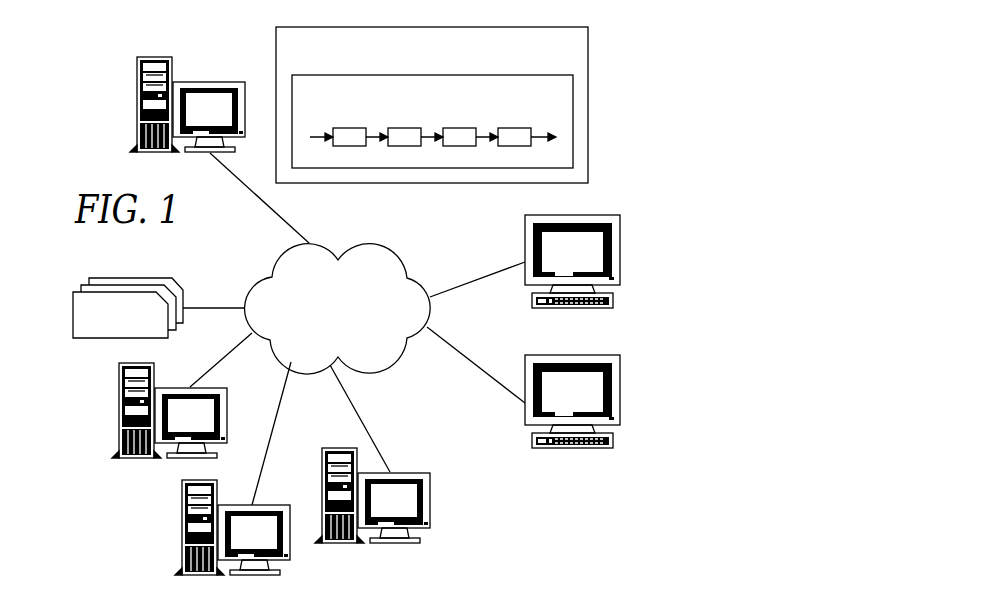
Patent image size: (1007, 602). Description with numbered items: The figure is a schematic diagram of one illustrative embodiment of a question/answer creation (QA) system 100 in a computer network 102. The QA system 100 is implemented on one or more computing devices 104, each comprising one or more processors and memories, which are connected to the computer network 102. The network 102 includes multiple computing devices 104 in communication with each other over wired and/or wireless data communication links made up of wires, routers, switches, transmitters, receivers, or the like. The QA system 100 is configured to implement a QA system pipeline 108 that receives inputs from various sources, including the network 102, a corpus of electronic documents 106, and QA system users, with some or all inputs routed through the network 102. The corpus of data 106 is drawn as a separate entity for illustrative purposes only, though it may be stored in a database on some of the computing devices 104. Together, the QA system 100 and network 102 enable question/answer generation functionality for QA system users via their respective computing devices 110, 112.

The question/answer creation (QA) system 100 is at (276, 50).
The computer network 102 is at (366, 247).
The computing devices 104 is at (137, 78).
The corpus of electronic documents 106 is at (112, 278).
The QA system pipeline 108 is at (332, 74).
The QA system user computing device 110 is at (620, 232).
The QA system user computing device 112 is at (620, 373).